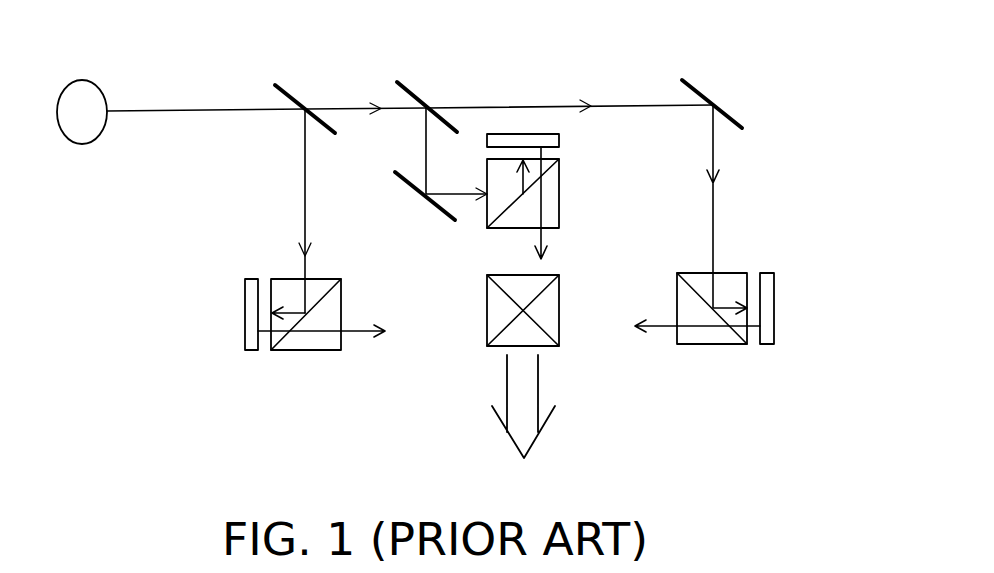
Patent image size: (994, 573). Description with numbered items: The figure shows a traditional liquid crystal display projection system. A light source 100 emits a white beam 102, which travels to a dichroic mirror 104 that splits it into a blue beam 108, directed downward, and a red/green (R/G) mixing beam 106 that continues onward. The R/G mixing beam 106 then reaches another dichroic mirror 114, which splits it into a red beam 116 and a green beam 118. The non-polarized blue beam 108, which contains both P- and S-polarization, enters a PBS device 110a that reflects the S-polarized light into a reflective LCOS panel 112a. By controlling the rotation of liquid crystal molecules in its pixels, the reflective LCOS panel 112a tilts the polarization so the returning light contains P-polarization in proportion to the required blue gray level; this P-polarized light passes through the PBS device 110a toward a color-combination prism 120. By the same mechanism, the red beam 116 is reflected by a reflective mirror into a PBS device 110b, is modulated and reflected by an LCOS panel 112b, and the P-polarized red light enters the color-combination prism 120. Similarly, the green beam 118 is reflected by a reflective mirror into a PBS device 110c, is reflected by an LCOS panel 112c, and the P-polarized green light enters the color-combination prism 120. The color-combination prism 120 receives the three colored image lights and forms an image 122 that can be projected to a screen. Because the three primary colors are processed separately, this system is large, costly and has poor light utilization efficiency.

The light source 100 is at (88, 80).
The white beam 102 is at (180, 110).
The dichroic mirror 104 is at (285, 90).
The R/G mixing beam 106 is at (342, 108).
The blue beam 108 is at (305, 185).
The PBS device 110a is at (330, 278).
The PBS device 110b is at (560, 180).
The PBS device 110c is at (727, 273).
The reflective LCOS panel 112a is at (245, 343).
The LCOS panel 112b is at (560, 140).
The LCOS panel 112c is at (775, 290).
The beam splitter 114 is at (407, 85).
The red beam 116 is at (425, 128).
The green beam 118 is at (528, 107).
The color-combination prism 120 is at (559, 332).
The image 122 is at (507, 373).